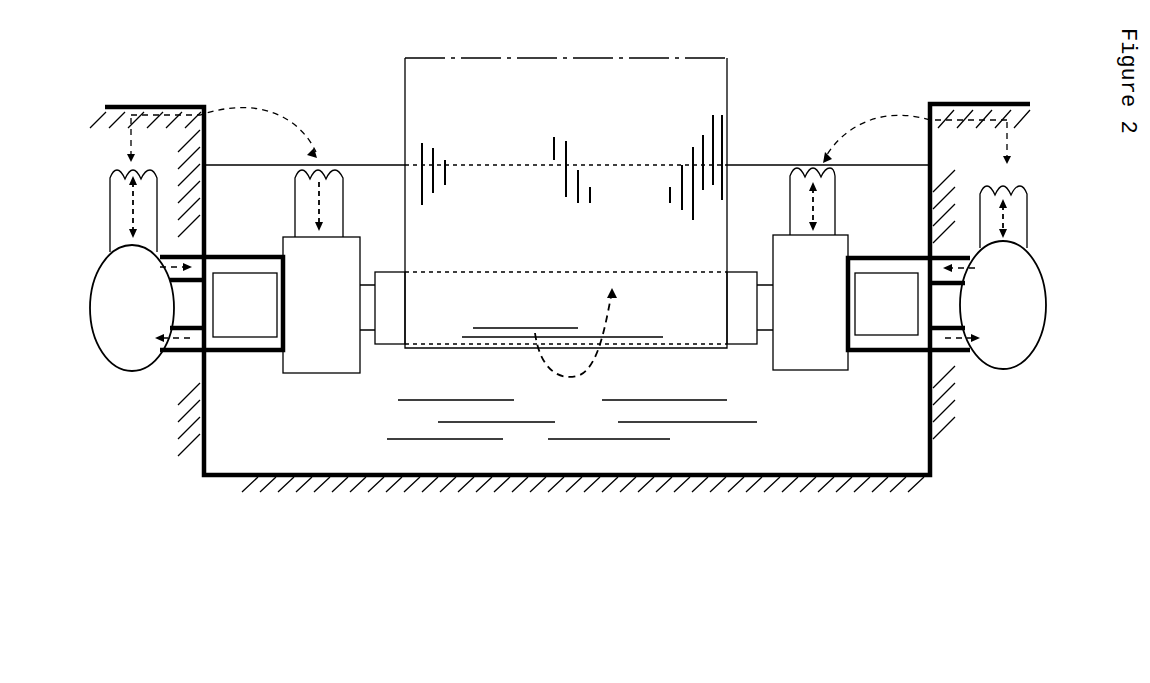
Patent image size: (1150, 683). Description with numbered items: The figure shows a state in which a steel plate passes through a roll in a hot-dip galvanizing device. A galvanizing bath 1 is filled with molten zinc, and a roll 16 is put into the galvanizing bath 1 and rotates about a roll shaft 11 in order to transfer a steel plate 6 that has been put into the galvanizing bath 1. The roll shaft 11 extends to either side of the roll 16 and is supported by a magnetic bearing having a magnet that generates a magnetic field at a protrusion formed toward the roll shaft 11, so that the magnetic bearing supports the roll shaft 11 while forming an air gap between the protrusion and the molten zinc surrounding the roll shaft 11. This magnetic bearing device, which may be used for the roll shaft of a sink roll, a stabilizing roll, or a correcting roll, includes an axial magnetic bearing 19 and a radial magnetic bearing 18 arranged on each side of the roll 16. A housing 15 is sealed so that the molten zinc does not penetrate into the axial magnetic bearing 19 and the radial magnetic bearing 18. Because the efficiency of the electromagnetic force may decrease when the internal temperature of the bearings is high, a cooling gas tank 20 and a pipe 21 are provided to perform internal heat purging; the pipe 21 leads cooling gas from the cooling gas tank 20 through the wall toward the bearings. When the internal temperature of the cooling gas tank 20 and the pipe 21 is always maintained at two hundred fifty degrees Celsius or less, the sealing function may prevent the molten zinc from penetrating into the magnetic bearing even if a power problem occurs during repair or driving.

The galvanizing bath 1 is at (637, 458).
The steel plate 6 is at (513, 78).
The roll shaft 11 is at (365, 300).
The housing 15 is at (237, 350).
The roll 16 is at (393, 338).
The radial magnetic bearing 18 is at (305, 262).
The axial magnetic bearing 19 is at (232, 290).
The cooling gas tank 20 is at (105, 277).
The pipe 21 is at (307, 200).